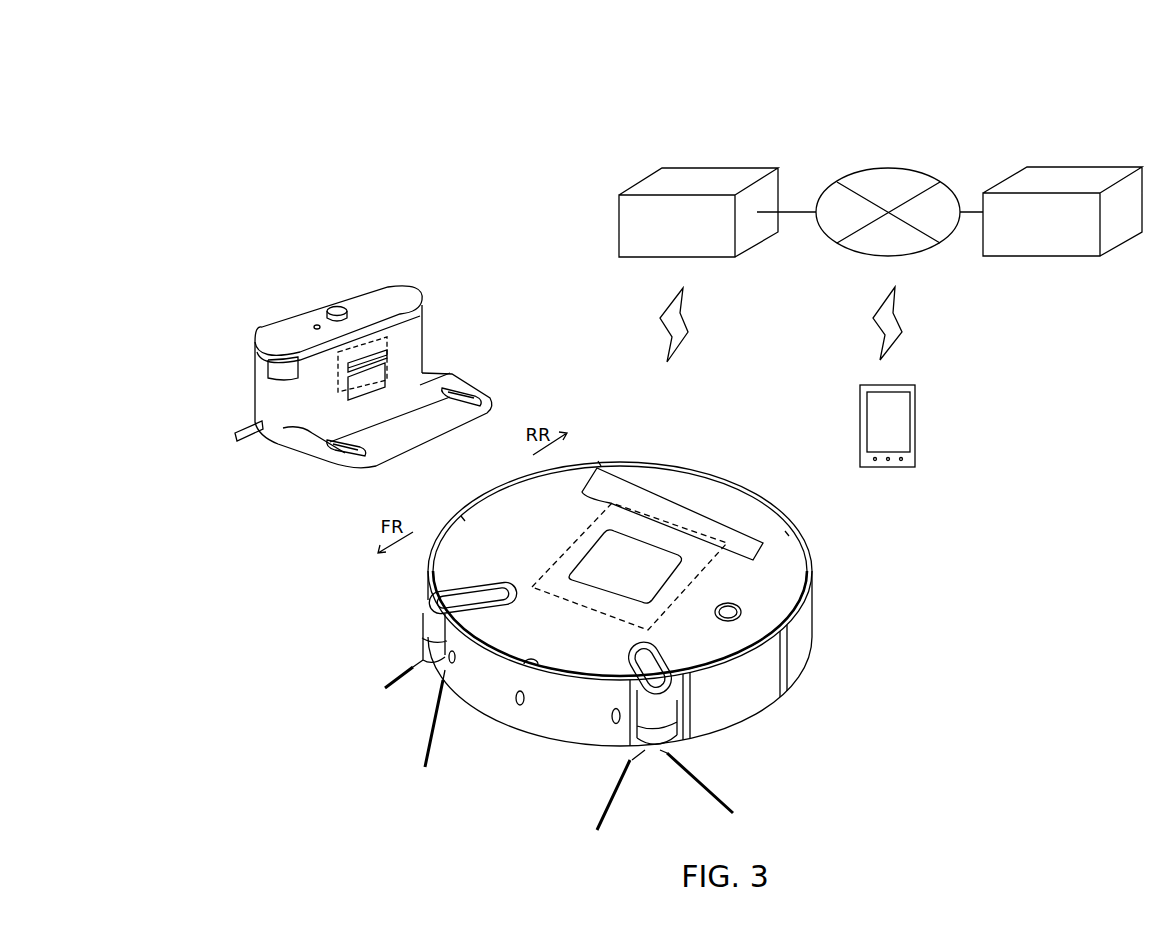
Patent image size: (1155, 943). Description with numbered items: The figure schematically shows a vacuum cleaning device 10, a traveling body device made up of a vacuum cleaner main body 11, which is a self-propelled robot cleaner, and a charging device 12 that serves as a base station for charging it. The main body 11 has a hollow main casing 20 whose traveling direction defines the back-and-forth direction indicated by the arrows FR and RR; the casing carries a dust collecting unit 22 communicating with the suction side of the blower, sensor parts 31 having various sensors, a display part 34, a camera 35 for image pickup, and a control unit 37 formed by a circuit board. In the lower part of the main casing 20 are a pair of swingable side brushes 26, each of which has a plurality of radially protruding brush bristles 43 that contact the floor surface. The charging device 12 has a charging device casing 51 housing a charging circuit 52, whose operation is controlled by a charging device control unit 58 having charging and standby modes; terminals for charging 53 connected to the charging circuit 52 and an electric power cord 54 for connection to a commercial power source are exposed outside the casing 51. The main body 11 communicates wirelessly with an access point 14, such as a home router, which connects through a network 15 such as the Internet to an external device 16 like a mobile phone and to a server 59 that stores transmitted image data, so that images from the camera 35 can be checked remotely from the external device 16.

The vacuum cleaning device 10 is at (832, 108).
The vacuum cleaner main body 11 is at (690, 436).
The charging device 12 is at (384, 268).
The access point 14 is at (720, 168).
The network 15 is at (886, 168).
The external device 16 is at (916, 403).
The main casing 20 is at (773, 562).
The dust collecting unit 22 is at (725, 507).
The side brush 26 is at (403, 638).
The sensor part 31 is at (446, 664).
The display part 34 is at (677, 577).
The camera 35 is at (529, 657).
The control unit 37 is at (715, 558).
The brush bristles 43 is at (398, 679).
The charging device casing 51 is at (398, 292).
The charging circuit 52 is at (388, 340).
The charging device control unit 58 is at (367, 375).
The terminals for charging 53 is at (355, 449).
The electric power cord 54 is at (243, 438).
The server 59 is at (1089, 167).